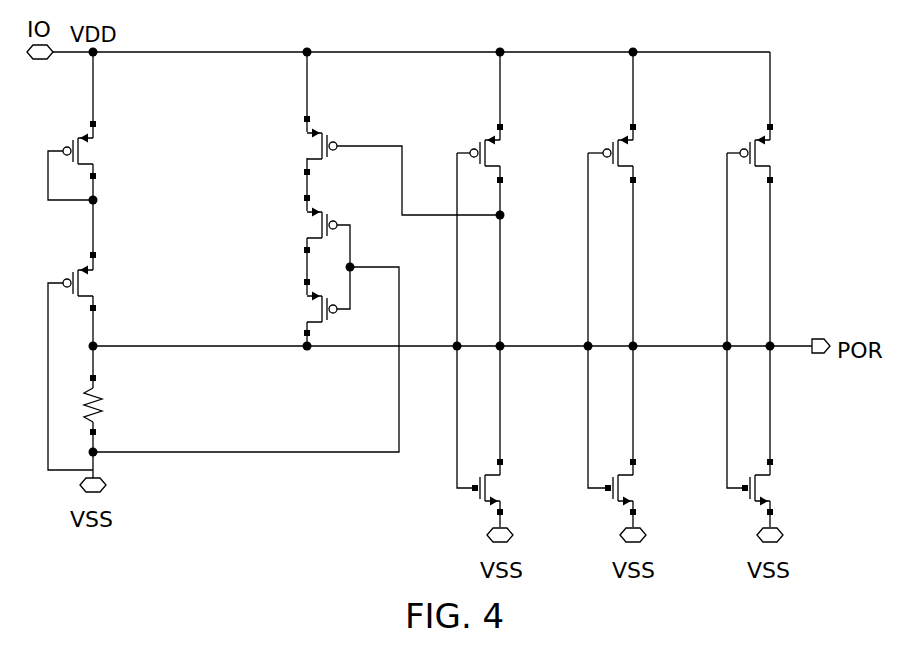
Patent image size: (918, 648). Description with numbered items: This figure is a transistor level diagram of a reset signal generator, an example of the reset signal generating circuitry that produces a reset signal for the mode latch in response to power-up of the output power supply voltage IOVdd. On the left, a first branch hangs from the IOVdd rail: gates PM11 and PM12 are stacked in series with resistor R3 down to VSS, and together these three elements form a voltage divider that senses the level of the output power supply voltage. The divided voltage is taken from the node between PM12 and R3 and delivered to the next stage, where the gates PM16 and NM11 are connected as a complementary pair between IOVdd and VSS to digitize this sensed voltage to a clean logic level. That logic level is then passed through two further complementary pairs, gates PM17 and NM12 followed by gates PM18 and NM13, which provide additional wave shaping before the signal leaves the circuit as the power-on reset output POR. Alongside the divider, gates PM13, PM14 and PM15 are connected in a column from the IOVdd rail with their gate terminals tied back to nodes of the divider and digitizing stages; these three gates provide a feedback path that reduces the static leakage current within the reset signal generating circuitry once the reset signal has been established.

The gate PM11 is at (107, 163).
The gate PM12 is at (107, 361).
The gate PM13 is at (369, 165).
The gate PM14 is at (294, 231).
The gate PM15 is at (294, 301).
The gate PM16 is at (511, 153).
The gate PM17 is at (644, 153).
The gate PM18 is at (782, 153).
The gate NM11 is at (518, 487).
The gate NM12 is at (652, 487).
The gate NM13 is at (788, 487).
The resistor R3 is at (110, 405).